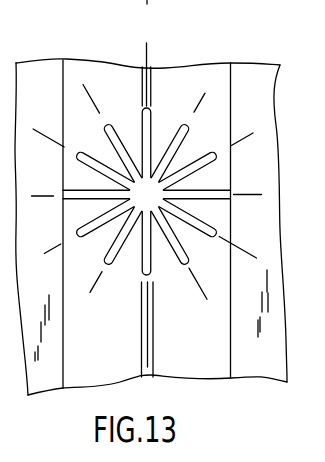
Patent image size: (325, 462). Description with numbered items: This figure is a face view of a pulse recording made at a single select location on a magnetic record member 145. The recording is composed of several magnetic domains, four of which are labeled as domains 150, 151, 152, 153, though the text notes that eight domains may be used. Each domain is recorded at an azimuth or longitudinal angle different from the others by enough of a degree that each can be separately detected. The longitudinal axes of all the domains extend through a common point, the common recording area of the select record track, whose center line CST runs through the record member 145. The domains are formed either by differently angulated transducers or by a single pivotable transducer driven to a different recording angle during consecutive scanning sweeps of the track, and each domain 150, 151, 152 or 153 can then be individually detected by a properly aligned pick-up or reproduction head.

The magnetic record member 145 is at (269, 75).
The center line of select track CST is at (147, 64).
The first magnetic domain 150 is at (152, 108).
The second magnetic domain 151 is at (184, 124).
The third magnetic domain 152 is at (217, 151).
The fourth magnetic domain 153 is at (208, 202).